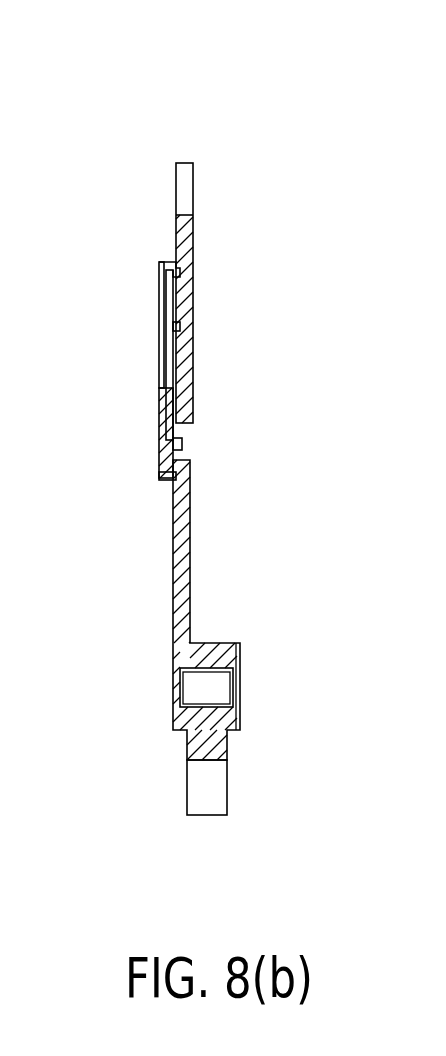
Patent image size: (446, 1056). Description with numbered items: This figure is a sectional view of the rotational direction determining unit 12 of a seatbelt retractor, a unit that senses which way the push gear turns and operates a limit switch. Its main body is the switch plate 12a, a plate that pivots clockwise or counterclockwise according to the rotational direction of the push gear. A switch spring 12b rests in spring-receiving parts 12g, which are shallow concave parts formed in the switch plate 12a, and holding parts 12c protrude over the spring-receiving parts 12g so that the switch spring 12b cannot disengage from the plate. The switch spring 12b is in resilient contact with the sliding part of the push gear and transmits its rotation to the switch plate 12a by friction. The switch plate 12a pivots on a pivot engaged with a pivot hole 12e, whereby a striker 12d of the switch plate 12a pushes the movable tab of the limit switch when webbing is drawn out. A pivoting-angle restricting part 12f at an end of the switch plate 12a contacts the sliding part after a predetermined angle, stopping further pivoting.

The rotational direction determining unit 12 is at (216, 104).
The switch plate 12a is at (183, 512).
The switch spring 12b is at (172, 326).
The holding part 12c is at (167, 412).
The striker 12d is at (217, 787).
The pivot hole 12e is at (190, 688).
The pivoting-angle restricting part 12f is at (183, 190).
The spring-receiving part 12g is at (170, 276).